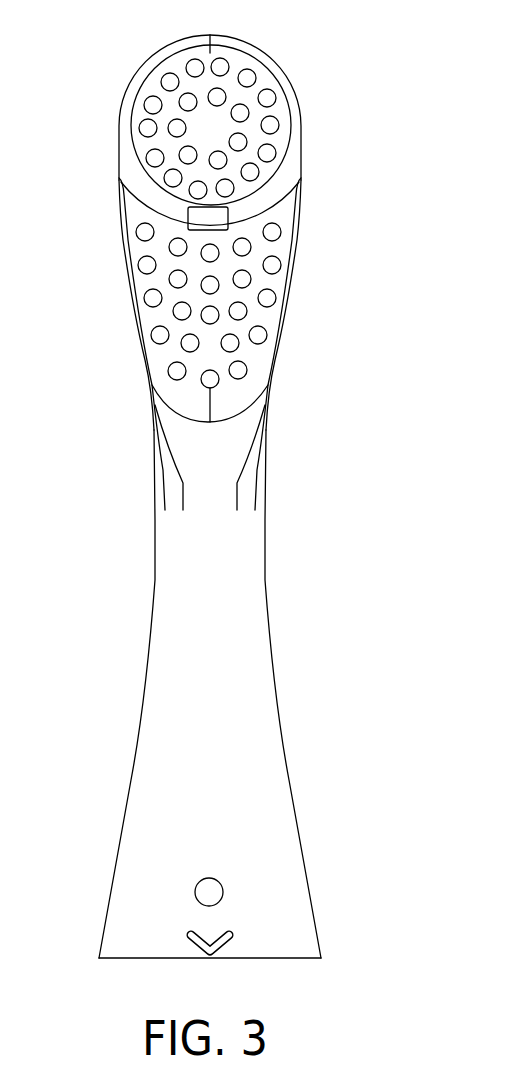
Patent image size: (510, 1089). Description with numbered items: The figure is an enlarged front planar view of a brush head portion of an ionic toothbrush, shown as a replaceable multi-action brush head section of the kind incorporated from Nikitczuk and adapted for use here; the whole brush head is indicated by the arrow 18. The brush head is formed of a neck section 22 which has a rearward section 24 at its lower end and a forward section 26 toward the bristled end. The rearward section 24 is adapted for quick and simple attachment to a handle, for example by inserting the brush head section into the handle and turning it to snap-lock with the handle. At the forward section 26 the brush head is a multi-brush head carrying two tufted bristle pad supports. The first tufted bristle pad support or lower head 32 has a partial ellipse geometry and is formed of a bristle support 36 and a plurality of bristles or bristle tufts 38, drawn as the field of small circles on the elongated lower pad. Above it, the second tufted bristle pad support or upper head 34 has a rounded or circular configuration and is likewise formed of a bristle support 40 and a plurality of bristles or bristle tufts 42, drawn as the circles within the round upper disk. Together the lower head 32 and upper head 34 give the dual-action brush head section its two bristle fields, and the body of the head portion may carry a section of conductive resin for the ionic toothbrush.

The brush head 18 is at (306, 441).
The neck section 22 is at (268, 640).
The rearward section 24 is at (105, 920).
The forward section 26 is at (267, 408).
The first tufted bristle pad support 32 is at (142, 283).
The second tufted bristle pad support 34 is at (265, 80).
The bristle support 36 is at (150, 320).
The bristle tufts 38 is at (148, 332).
The bristle support 40 is at (150, 88).
The bristle tufts 42 is at (143, 105).